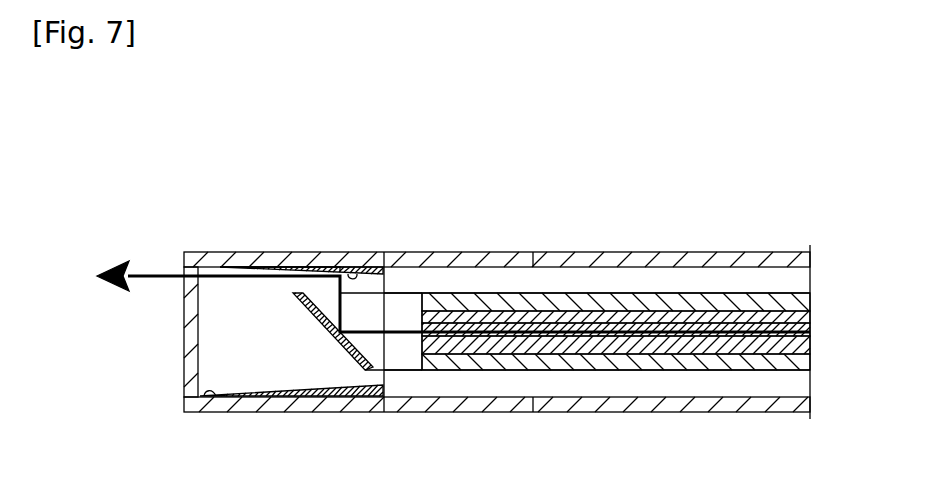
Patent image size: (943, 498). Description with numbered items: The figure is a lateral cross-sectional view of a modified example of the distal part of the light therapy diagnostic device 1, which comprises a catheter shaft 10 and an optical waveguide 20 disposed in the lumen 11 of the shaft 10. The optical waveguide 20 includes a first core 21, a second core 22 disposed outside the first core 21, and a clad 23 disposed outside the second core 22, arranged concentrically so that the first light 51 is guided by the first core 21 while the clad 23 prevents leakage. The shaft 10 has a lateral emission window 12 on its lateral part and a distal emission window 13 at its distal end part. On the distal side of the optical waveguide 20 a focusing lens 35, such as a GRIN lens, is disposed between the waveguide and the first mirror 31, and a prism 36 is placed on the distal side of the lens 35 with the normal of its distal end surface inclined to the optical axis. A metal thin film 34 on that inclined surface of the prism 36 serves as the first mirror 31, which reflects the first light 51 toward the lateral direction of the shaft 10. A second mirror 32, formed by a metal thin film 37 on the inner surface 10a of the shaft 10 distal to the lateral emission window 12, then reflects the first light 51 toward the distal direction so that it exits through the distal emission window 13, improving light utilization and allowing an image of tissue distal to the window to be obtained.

The light therapy diagnostic device 1 is at (167, 193).
The catheter shaft 10 is at (471, 338).
The inner surface of the shaft 10a is at (210, 394).
The lumen 11 is at (223, 362).
The lateral emission window 12 is at (425, 256).
The distal emission window 13 is at (190, 348).
The optical waveguide 20 is at (616, 262).
The first core 21 is at (544, 316).
The second core 22 is at (599, 316).
The clad 23 is at (552, 212).
The first mirror 31 is at (375, 369).
The second mirror 32 is at (365, 273).
The metal thin film 34 is at (341, 341).
The lens 35 is at (412, 362).
The prism 36 is at (376, 302).
The metal thin film 37 is at (340, 265).
The first light 51 is at (142, 273).